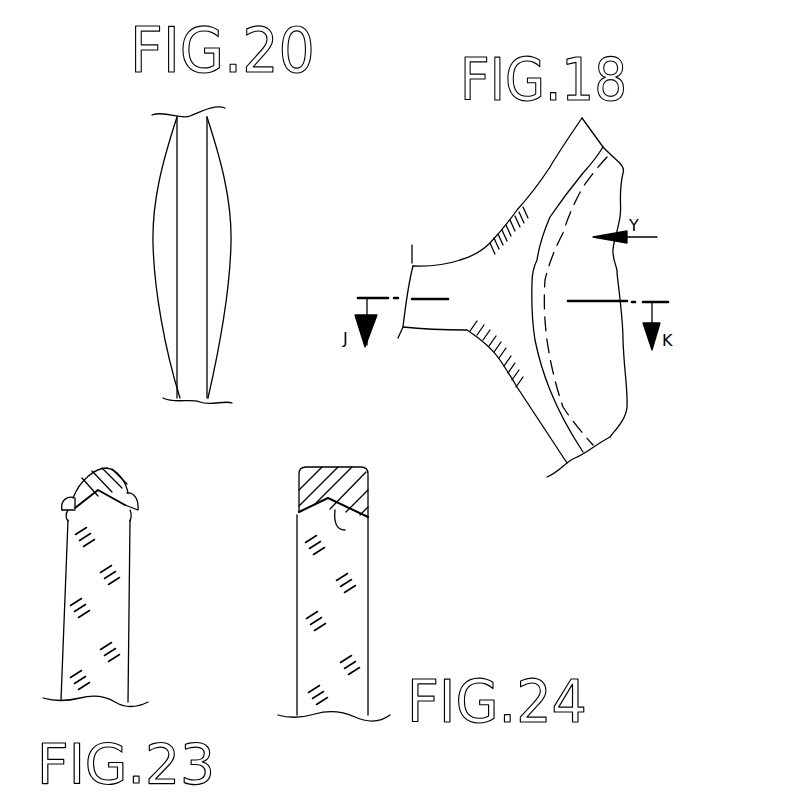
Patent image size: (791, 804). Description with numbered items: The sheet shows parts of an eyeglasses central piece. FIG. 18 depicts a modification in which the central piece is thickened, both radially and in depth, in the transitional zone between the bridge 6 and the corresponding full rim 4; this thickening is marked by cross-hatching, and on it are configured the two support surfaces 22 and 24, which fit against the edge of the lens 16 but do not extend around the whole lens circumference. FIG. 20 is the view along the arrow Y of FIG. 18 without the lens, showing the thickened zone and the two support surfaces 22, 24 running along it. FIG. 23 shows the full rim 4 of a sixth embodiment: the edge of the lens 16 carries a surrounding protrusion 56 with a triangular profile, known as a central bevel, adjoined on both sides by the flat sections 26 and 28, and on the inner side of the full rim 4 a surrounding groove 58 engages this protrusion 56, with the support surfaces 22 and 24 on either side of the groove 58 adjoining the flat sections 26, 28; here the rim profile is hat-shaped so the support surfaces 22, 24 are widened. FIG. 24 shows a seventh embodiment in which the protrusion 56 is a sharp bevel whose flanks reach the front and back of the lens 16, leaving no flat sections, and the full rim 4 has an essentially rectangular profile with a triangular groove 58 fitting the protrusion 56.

In FIG. 18, the full rim 4 is at (516, 427).
In FIG. 23, the full rim 4 is at (112, 452).
In FIG. 24, the full rim 4 is at (387, 494).
In FIG. 18, the bridge 6 is at (425, 277).
In FIG. 18, the lens 16 is at (608, 427).
In FIG. 23, the lens 16 is at (72, 626).
In FIG. 24, the lens 16 is at (352, 628).
In FIG. 20, the support surface 22 is at (222, 234).
In FIG. 23, the support surface 22 is at (128, 493).
In FIG. 20, the support surface 24 is at (162, 237).
In FIG. 23, the support surface 24 is at (75, 497).
In FIG. 23, the flat section 26 is at (67, 520).
In FIG. 23, the flat section 28 is at (127, 520).
In FIG. 23, the protrusion 56 is at (99, 505).
In FIG. 24, the protrusion 56 is at (345, 530).
In FIG. 23, the groove 58 is at (88, 487).
In FIG. 24, the groove 58 is at (317, 502).